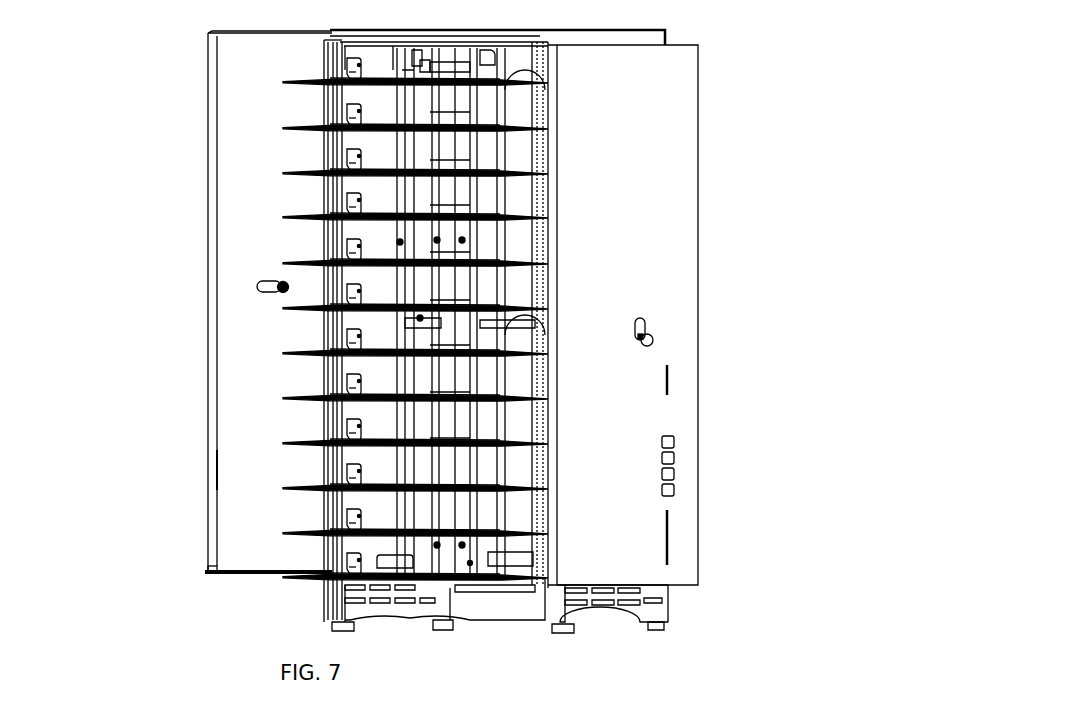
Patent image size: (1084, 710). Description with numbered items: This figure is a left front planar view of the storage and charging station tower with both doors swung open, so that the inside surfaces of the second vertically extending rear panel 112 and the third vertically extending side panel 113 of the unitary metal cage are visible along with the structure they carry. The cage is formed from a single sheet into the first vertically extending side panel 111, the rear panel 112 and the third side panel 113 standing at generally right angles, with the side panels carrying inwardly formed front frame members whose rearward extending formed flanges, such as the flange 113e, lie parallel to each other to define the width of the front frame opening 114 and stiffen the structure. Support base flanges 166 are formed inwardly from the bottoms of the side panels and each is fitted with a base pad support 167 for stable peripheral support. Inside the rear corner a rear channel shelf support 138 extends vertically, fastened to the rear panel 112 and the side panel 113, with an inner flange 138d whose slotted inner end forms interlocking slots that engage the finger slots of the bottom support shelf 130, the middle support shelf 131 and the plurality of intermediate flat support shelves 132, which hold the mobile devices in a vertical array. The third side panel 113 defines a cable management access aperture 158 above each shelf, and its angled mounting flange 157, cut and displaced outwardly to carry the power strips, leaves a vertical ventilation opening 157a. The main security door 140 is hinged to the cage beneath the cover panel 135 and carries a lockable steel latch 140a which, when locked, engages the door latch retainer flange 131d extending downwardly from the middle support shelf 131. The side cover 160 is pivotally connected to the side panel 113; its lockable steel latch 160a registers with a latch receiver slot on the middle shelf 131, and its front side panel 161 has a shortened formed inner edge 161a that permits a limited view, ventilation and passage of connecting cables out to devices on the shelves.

The first vertically extending side panel 111 is at (668, 602).
The second vertically extending rear panel 112 is at (519, 608).
The third vertically extending side panel 113 is at (324, 612).
The rearward extending formed flange 113e is at (363, 270).
The front frame opening 114 is at (330, 500).
The bottom support shelf 130 is at (508, 588).
The middle support shelf 131 is at (513, 307).
The door latch retainer flange 131d is at (380, 323).
The intermediate flat support shelf 132 is at (362, 400).
The cover panel 135 is at (340, 46).
The rear channel shelf support 138 is at (330, 548).
The inner flange 138d is at (343, 105).
The main security door 140 is at (700, 64).
The lockable steel latch 140a is at (650, 326).
The angled mounting flange 157 is at (543, 405).
The vertical ventilation opening 157a is at (548, 462).
The cable management access aperture 158 is at (363, 203).
The side cover 160 is at (208, 183).
The lockable steel latch 160a is at (257, 286).
The front side panel 161 is at (208, 445).
The shortened formed inner edge 161a is at (220, 474).
The support base flange 166 is at (640, 620).
The base pad support 167 is at (658, 624).